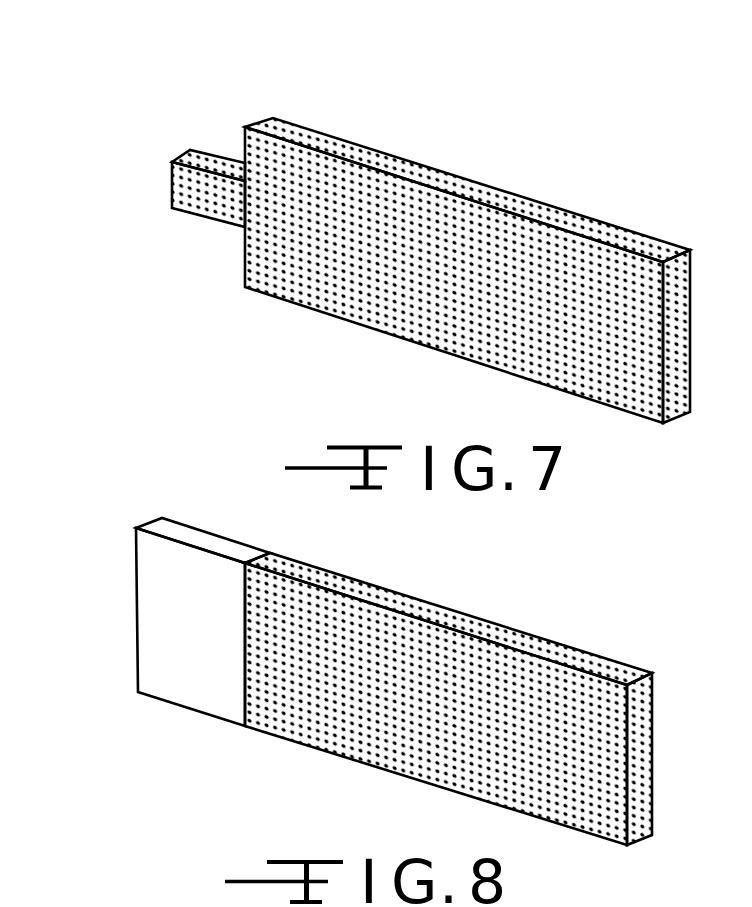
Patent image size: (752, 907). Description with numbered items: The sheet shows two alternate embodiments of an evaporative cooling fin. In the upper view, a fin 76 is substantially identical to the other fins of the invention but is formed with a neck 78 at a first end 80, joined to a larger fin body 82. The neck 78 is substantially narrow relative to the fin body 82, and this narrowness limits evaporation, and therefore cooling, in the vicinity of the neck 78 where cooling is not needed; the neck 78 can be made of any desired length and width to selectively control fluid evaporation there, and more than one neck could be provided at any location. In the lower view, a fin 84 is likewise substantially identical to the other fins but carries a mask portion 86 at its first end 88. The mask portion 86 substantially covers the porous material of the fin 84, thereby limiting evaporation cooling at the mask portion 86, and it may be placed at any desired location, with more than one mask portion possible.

In FIG. 7, the fin 76 is at (471, 254).
In FIG. 7, the neck 78 is at (165, 139).
In FIG. 7, the first end 80 is at (195, 214).
In FIG. 7, the fin body 82 is at (617, 225).
In FIG. 8, the fin 84 is at (571, 642).
In FIG. 8, the mask portion 86 is at (331, 630).
In FIG. 8, the first end 88 is at (185, 532).